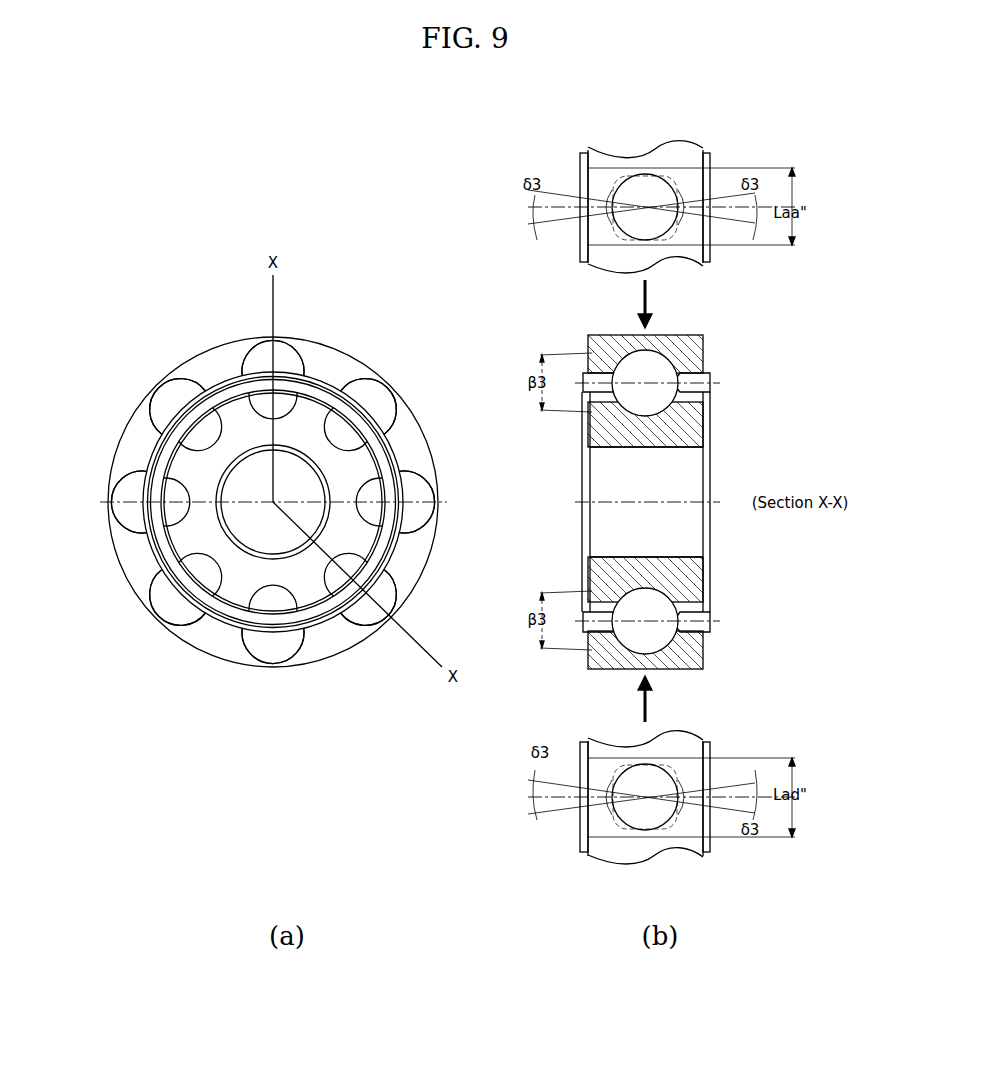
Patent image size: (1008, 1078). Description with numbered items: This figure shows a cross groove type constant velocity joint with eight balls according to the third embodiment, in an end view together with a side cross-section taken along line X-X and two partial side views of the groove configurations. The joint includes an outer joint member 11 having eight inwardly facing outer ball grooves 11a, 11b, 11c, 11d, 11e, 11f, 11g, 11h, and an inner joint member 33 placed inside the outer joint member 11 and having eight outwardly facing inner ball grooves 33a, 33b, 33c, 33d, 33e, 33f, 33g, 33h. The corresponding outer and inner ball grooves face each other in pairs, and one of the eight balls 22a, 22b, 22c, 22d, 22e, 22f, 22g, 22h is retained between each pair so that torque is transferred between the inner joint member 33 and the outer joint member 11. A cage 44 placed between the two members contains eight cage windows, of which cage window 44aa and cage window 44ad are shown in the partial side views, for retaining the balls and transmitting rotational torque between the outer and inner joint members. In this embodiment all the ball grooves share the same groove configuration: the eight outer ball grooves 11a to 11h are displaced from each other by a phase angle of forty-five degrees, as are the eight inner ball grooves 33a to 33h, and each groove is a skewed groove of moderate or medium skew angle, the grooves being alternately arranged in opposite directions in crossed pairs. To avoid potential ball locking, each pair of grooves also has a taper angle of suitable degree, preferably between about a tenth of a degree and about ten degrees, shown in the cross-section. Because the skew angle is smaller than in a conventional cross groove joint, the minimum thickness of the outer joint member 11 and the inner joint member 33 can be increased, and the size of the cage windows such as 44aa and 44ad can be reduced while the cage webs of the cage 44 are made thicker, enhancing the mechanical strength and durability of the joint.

The outer joint member 11 is at (218, 348).
The outer ball groove 11a is at (288, 352).
The outer ball groove 11b is at (412, 422).
The outer ball groove 11c is at (436, 514).
The outer ball groove 11d is at (410, 597).
The outer ball groove 11e is at (316, 662).
The outer ball groove 11f is at (138, 597).
The outer ball groove 11g is at (110, 480).
The outer ball groove 11h is at (130, 420).
The ball 22a is at (300, 378).
The ball 22b is at (372, 404).
The ball 22c is at (420, 500).
The ball 22d is at (368, 602).
The ball 22e is at (273, 652).
The ball 22f is at (184, 600).
The ball 22g is at (125, 502).
The ball 22h is at (170, 405).
The inner joint member 33 is at (254, 388).
The inner ball groove 33a is at (300, 398).
The inner ball groove 33b is at (356, 418).
The inner ball groove 33c is at (380, 495).
The inner ball groove 33d is at (346, 586).
The inner ball groove 33e is at (260, 616).
The inner ball groove 33f is at (200, 592).
The inner ball groove 33g is at (165, 506).
The inner ball groove 33h is at (200, 425).
The cage 44 is at (211, 395).
The cage window 44aa is at (690, 250).
The cage window 44ad is at (690, 836).